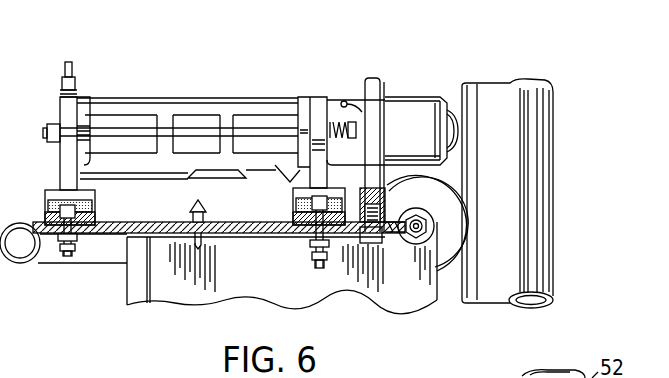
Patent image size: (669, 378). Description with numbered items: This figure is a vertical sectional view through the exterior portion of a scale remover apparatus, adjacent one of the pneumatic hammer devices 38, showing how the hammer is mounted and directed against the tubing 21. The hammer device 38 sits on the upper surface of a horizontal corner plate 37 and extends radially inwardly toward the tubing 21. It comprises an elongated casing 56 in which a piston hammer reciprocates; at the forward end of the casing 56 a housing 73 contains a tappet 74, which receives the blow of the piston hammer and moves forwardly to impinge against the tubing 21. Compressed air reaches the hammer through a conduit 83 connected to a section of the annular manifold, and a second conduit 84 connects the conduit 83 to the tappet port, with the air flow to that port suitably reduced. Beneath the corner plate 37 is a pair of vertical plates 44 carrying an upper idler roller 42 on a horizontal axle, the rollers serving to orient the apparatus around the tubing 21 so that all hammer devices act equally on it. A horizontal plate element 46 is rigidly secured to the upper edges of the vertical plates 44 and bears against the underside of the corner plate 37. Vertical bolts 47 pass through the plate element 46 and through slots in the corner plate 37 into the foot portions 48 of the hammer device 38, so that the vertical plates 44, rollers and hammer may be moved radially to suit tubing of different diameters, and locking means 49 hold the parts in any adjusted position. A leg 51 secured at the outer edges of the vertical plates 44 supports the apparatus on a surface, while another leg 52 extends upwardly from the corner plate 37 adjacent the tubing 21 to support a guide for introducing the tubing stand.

The tubing 21 is at (551, 247).
The corner plate 37 is at (227, 228).
The pneumatic hammer device 38 is at (289, 86).
The upper idler roller 42 is at (461, 203).
The vertical plate 44 is at (410, 290).
The horizontal plate element 46 is at (262, 236).
The vertical bolt 47 is at (72, 256).
The foot portion 48 is at (95, 205).
The locking means 49 is at (199, 240).
The leg 51 is at (142, 306).
The leg 52 is at (384, 84).
The casing 56 is at (152, 102).
The housing 73 is at (418, 97).
The tappet 74 is at (457, 130).
The conduit 83 is at (72, 62).
The second conduit 84 is at (551, 375).